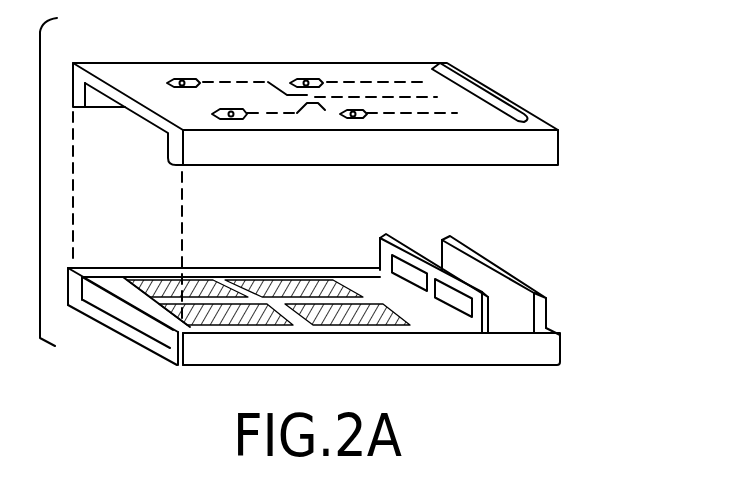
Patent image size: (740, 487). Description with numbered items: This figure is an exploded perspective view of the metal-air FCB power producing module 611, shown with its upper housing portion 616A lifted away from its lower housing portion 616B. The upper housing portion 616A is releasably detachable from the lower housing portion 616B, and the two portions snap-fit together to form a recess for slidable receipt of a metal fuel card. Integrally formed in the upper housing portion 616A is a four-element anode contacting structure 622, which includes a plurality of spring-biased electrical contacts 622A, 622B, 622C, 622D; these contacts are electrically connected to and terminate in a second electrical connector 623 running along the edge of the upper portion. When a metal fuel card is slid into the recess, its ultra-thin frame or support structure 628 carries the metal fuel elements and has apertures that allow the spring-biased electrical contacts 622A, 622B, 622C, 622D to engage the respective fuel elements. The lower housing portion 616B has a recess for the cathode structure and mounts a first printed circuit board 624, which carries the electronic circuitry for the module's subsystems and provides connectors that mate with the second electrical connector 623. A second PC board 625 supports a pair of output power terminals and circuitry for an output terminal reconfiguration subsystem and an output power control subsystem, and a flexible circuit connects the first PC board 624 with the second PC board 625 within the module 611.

The FCB power producing module 611 is at (573, 355).
The upper housing portion 616A is at (128, 68).
The lower housing portion 616B is at (135, 343).
The four-element anode contacting structure 622 is at (280, 80).
The spring-biased electrical contact 622A is at (235, 120).
The spring-biased electrical contact 622B is at (183, 80).
The spring-biased electrical contact 622C is at (308, 78).
The spring-biased electrical contact 622D is at (360, 118).
The second electrical connector 623 is at (490, 92).
The first printed circuit board 624 is at (488, 320).
The second PC board 625 is at (542, 308).
The ultra-thin frame or support structure 628 is at (470, 272).